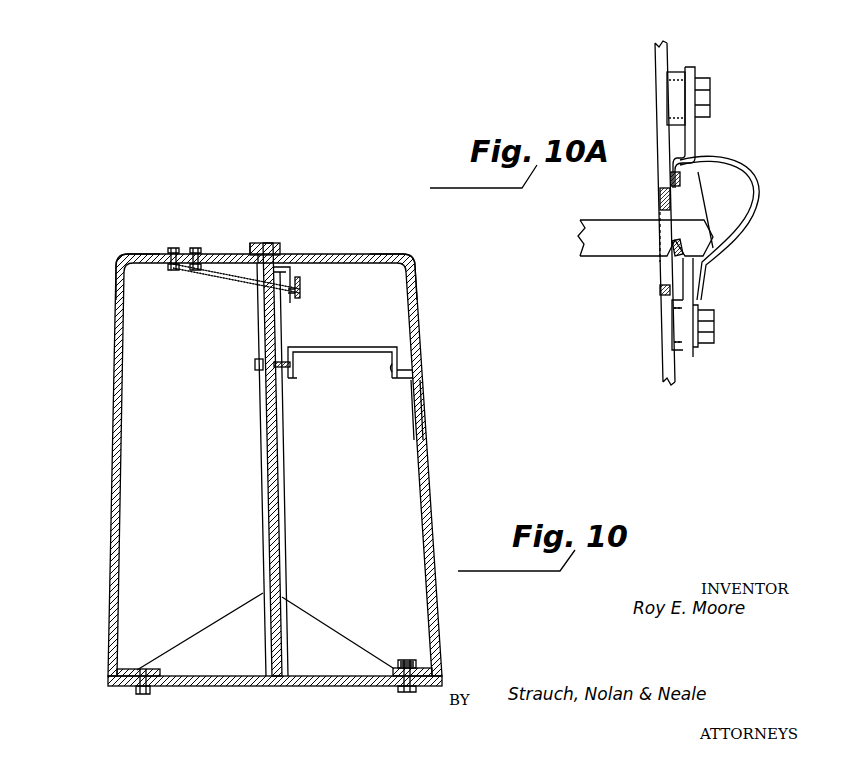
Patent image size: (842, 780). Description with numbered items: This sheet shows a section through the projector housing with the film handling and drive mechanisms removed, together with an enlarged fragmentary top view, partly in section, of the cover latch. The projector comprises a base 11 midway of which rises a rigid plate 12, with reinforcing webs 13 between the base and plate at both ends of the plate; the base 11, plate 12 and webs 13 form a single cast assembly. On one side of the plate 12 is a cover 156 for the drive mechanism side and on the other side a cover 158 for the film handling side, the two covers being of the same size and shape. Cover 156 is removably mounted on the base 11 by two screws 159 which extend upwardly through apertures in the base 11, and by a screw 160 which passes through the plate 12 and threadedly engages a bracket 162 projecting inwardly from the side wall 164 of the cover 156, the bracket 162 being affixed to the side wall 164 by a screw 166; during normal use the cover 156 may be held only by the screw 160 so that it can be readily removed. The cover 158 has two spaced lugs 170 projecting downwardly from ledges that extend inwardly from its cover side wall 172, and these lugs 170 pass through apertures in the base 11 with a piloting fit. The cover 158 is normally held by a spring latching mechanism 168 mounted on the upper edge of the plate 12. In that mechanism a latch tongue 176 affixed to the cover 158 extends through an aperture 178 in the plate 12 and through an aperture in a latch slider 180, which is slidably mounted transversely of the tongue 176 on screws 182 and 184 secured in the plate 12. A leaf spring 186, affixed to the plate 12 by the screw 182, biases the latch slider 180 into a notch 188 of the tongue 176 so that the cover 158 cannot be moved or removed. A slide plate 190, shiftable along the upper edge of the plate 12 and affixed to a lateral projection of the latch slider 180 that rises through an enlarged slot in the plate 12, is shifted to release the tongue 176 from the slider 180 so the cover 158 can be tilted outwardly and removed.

In FIG. 10, the base 11 is at (226, 686).
In FIG. 10, the plate 12 is at (278, 505).
In FIG. 10A, the plate 12 is at (665, 52).
In FIG. 10, the reinforcing webs 13 is at (314, 633).
In FIG. 10, the cover 156 is at (383, 258).
In FIG. 10, the cover 158 is at (114, 270).
In FIG. 10, the screws 159 is at (404, 693).
In FIG. 10, the screw 160 is at (258, 362).
In FIG. 10, the bracket 162 is at (340, 347).
In FIG. 10, the side wall 164 is at (425, 412).
In FIG. 10, the screw 166 is at (390, 372).
In FIG. 10, the spring latching mechanism 168 is at (276, 243).
In FIG. 10, the lugs 170 is at (143, 695).
In FIG. 10, the cover side wall 172 is at (115, 341).
In FIG. 10, the latch tongue 176 is at (240, 283).
In FIG. 10A, the latch tongue 176 is at (612, 262).
In FIG. 10A, the aperture 178 is at (660, 206).
In FIG. 10, the latch slider 180 is at (283, 302).
In FIG. 10A, the latch slider 180 is at (696, 140).
In FIG. 10A, the screw 182 is at (716, 323).
In FIG. 10A, the screw 184 is at (710, 95).
In FIG. 10A, the leaf spring 186 is at (750, 186).
In FIG. 10A, the notch 188 is at (670, 256).
In FIG. 10, the slide plate 190 is at (254, 242).